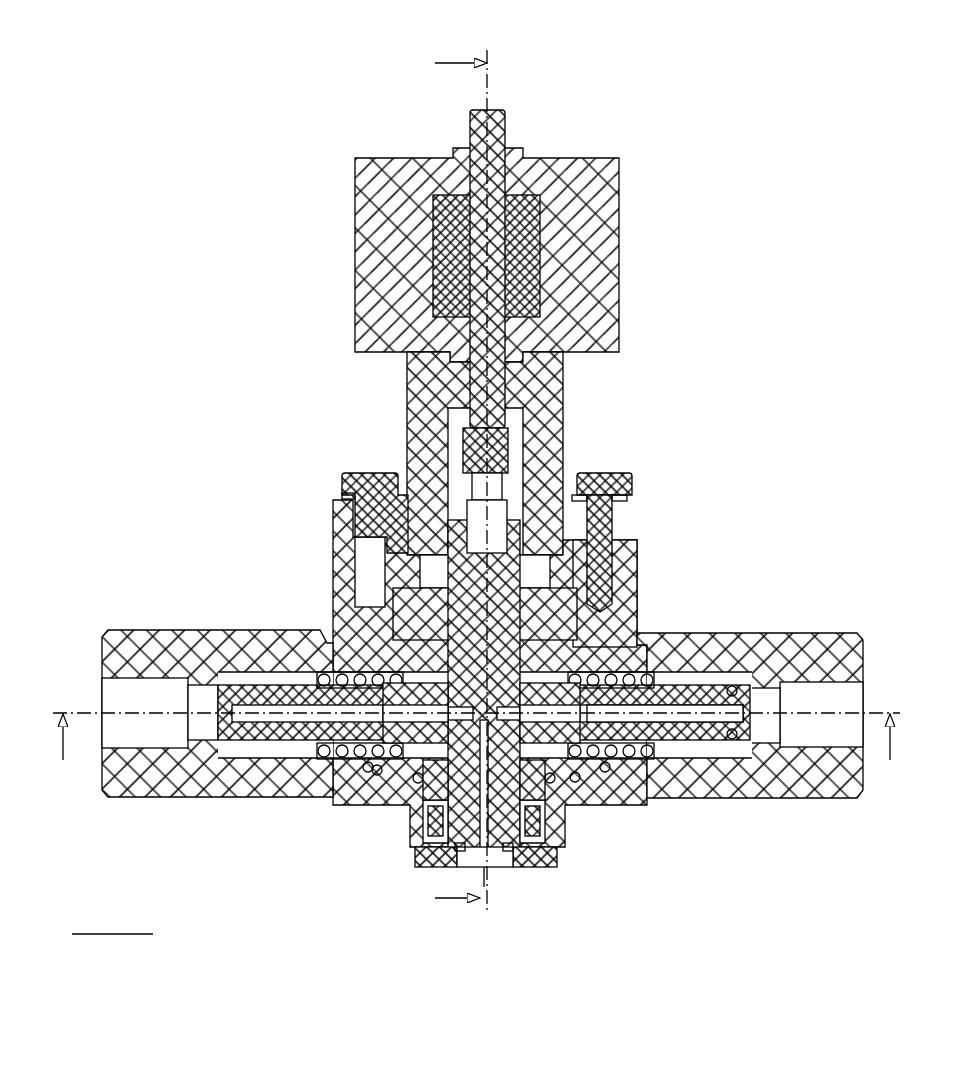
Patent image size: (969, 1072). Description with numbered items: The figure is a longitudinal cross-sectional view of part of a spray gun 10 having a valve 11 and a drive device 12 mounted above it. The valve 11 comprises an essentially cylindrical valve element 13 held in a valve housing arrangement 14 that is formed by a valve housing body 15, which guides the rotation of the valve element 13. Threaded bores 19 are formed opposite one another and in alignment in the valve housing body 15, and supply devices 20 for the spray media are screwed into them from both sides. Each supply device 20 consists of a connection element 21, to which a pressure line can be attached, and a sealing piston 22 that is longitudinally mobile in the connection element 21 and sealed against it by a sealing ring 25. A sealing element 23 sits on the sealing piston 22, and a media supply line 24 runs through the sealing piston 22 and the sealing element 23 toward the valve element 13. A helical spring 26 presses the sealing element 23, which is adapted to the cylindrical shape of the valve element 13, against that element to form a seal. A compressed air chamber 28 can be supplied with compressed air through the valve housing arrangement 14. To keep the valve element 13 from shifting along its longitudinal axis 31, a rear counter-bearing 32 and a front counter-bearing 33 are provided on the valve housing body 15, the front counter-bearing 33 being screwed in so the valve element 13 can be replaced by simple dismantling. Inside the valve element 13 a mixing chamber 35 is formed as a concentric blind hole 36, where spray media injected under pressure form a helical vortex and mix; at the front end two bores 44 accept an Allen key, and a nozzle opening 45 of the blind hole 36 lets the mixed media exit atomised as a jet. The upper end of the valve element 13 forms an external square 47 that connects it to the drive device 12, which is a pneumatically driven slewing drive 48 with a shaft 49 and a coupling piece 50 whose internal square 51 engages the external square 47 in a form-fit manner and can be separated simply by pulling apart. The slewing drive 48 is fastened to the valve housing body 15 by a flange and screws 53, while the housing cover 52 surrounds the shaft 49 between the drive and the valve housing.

The spray gun 10 is at (138, 98).
The valve 11 is at (172, 555).
The drive device 12 is at (327, 233).
The valve element 13 is at (453, 807).
The valve housing arrangement 14 is at (330, 580).
The valve housing body 15 is at (628, 555).
The threaded bores 19 is at (377, 773).
The supply devices 20 is at (477, 664).
The connection element 21 is at (730, 647).
The sealing piston 22 is at (710, 740).
The sealing element 23 is at (528, 763).
The media supply line 24 is at (623, 717).
The sealing ring 25 is at (737, 740).
The helical spring 26 is at (603, 770).
The compressed air chamber 28 is at (527, 765).
The longitudinal axis 31 is at (487, 888).
The rear counter-bearing 32 is at (588, 602).
The front counter-bearing 33 is at (418, 858).
The mixing chamber 35 is at (425, 773).
The blind hole 36 is at (492, 853).
The bores 44 is at (460, 850).
The nozzle opening 45 is at (478, 856).
The external square 47 is at (512, 527).
The slewing drive 48 is at (352, 295).
The shaft 49 is at (495, 210).
The coupling piece 50 is at (493, 552).
The internal square 51 is at (363, 520).
The housing cover 52 is at (540, 468).
The screws 53 is at (343, 493).